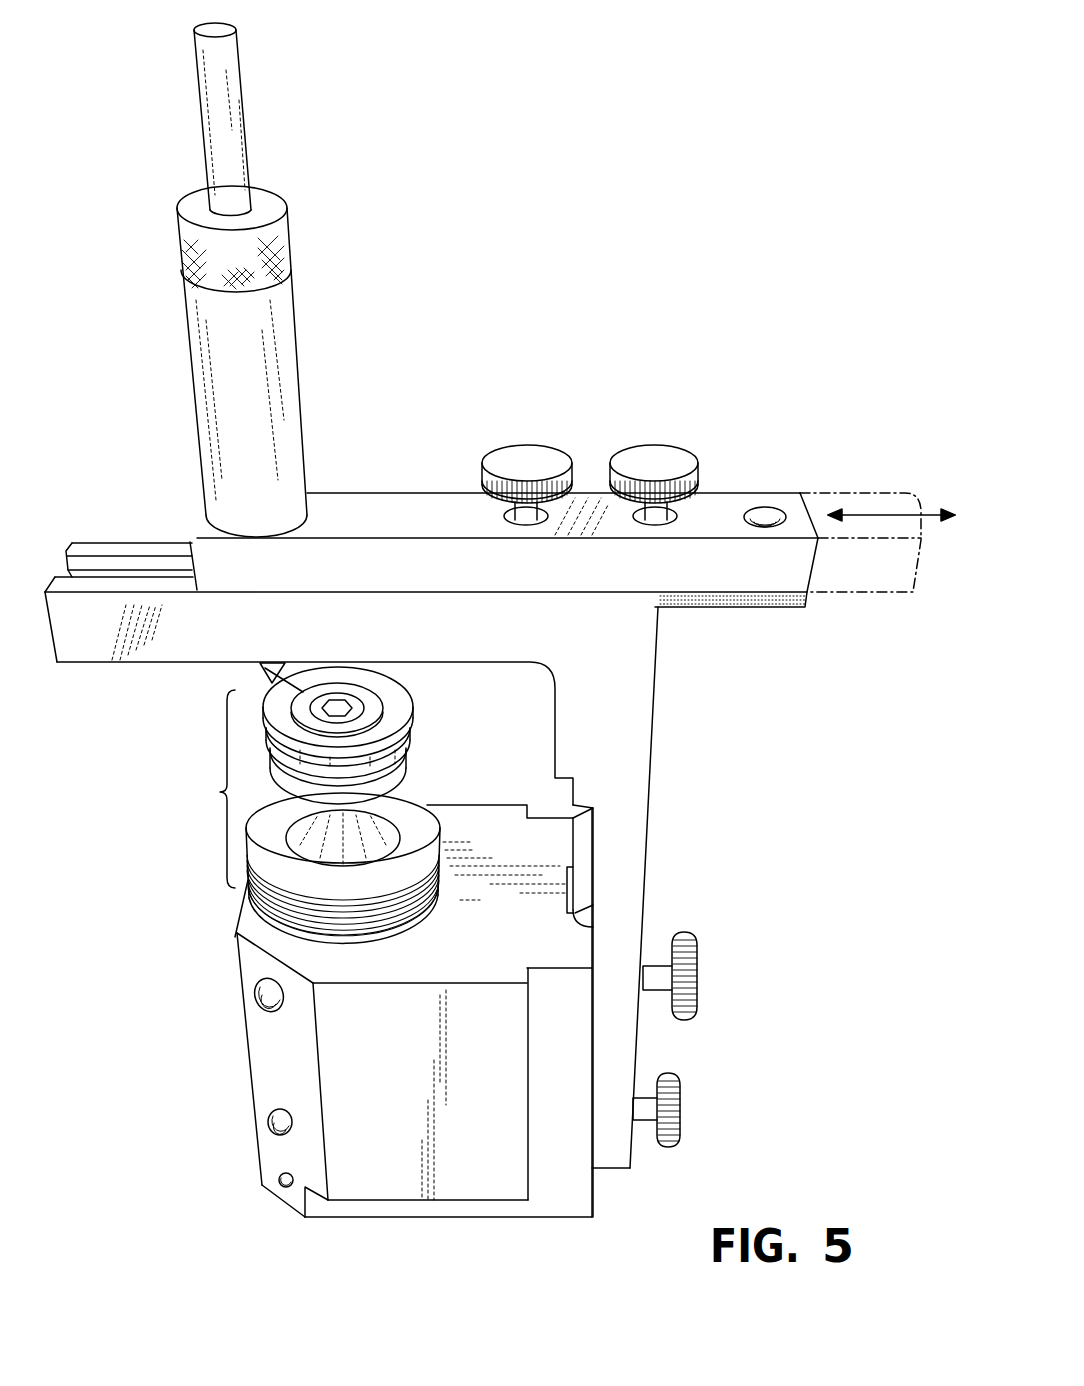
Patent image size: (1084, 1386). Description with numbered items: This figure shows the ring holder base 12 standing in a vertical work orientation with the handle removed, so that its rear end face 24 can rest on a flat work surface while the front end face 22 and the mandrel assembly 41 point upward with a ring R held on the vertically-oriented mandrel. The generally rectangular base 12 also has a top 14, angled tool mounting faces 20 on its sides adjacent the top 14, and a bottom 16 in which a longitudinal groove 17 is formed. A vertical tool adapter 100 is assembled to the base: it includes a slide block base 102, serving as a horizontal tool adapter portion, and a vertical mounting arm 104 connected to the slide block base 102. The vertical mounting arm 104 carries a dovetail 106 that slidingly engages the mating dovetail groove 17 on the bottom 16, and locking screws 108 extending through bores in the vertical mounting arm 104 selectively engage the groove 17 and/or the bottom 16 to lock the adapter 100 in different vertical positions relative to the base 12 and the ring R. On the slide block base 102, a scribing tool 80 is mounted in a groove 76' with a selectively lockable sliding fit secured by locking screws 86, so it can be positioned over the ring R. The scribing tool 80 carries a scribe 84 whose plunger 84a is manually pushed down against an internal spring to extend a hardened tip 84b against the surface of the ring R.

The plunger 84a is at (238, 138).
The scribe 84 is at (283, 390).
The hardened tip 84b is at (262, 666).
The scribing tool 80 is at (448, 492).
The locking screws 86 is at (525, 460).
The groove 76' is at (129, 527).
The slide block base 102 is at (127, 605).
The vertical tool adapter 100 is at (714, 691).
The mandrel assembly 41 is at (213, 789).
The ring R is at (418, 762).
The front end face 22 is at (465, 828).
The dovetail 106 is at (588, 840).
The vertical mounting arm 104 is at (637, 857).
The longitudinal groove 17 is at (572, 925).
The locking screws 108 is at (697, 968).
The bottom 16 is at (593, 1043).
The base 12 is at (229, 1027).
The angled tool mounting faces 20 is at (270, 1057).
The top 14 is at (255, 1127).
The rear end face 24 is at (415, 1218).